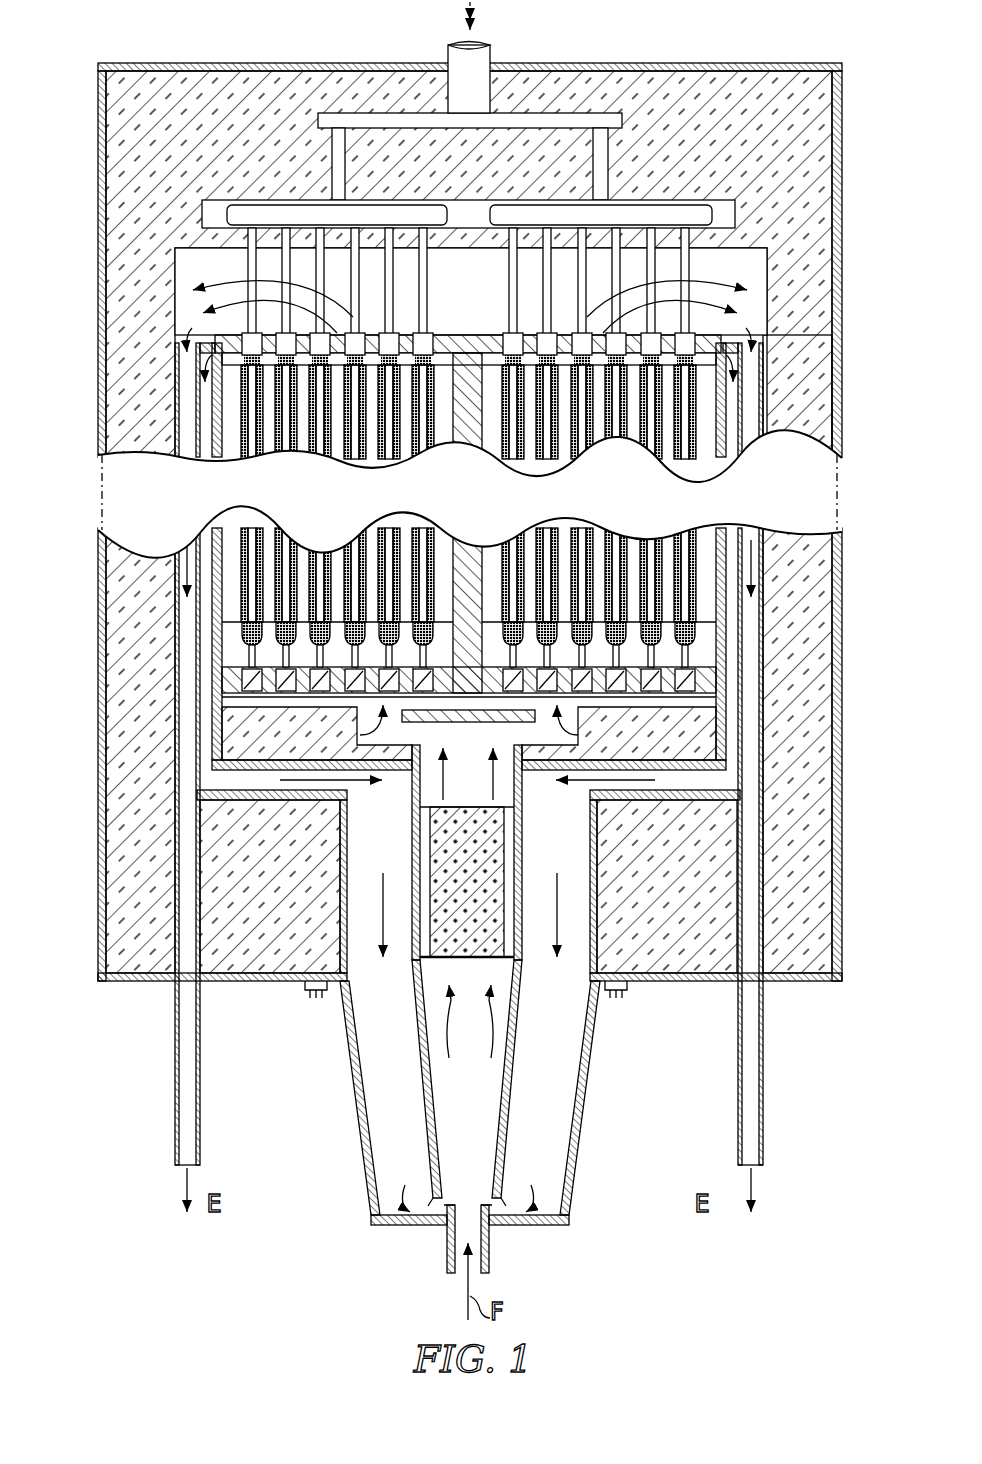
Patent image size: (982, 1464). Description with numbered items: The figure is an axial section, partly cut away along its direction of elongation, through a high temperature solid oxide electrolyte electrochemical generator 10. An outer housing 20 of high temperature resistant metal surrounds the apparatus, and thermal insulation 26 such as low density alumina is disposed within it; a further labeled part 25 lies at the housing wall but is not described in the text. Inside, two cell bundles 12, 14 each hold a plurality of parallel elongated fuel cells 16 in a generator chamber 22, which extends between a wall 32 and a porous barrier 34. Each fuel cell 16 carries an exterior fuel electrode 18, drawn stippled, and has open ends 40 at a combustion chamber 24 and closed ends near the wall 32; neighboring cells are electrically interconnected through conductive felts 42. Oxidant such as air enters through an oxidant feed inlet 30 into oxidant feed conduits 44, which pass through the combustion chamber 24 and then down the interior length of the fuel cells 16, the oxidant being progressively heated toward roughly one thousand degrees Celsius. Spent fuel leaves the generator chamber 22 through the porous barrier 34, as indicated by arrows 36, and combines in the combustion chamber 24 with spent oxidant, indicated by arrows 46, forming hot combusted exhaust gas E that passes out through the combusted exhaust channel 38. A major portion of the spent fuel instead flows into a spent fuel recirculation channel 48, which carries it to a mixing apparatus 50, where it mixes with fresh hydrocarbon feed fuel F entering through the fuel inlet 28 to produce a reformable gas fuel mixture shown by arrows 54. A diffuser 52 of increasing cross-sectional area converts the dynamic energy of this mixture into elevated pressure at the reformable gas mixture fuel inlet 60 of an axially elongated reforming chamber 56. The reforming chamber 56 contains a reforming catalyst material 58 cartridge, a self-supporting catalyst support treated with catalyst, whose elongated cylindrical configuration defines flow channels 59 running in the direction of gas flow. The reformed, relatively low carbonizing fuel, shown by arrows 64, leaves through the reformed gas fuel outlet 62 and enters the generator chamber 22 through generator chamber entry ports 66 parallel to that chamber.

The electrochemical generator 10 is at (275, 1293).
The cell bundle 12 is at (337, 493).
The cell bundle 14 is at (510, 468).
The fuel cell 16 is at (240, 641).
The fuel electrode 18 is at (282, 650).
The outer housing 20 is at (620, 66).
The generator chamber 22 is at (842, 357).
The combustion chamber 24 is at (758, 322).
The housing wall 25 is at (822, 215).
The thermal insulation 26 is at (210, 158).
The fresh hydrocarbon feed fuel inlet 28 is at (460, 1275).
The oxidant feed inlet 30 is at (478, 78).
The wall 32 is at (243, 682).
The porous barrier 34 is at (488, 328).
The spent fuel gas flow arrows 36 is at (242, 274).
The combusted exhaust channel 38 is at (183, 786).
The open ends 40 is at (547, 330).
The conductive felts 42 is at (257, 552).
The oxidant feed conduits 44 is at (512, 270).
The spent oxidant flow arrows 46 is at (228, 300).
The spent fuel recirculation channel 48 is at (208, 746).
The mixing apparatus 50 is at (457, 1220).
The diffuser 52 is at (472, 1105).
The reformable gas fuel mixture 54 is at (483, 1004).
The reforming chamber 56 is at (410, 873).
The reforming catalyst material 58 is at (487, 868).
The flow channels 59 is at (508, 913).
The reformable gas mixture fuel inlet 60 is at (425, 1047).
The reformed gas fuel outlet 62 is at (450, 800).
The reformed fuel flow arrows 64 is at (491, 778).
The generator chamber entry ports 66 is at (576, 714).